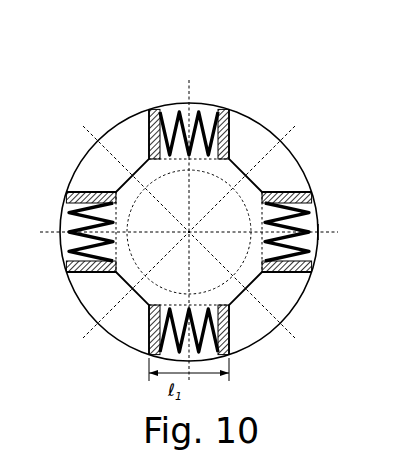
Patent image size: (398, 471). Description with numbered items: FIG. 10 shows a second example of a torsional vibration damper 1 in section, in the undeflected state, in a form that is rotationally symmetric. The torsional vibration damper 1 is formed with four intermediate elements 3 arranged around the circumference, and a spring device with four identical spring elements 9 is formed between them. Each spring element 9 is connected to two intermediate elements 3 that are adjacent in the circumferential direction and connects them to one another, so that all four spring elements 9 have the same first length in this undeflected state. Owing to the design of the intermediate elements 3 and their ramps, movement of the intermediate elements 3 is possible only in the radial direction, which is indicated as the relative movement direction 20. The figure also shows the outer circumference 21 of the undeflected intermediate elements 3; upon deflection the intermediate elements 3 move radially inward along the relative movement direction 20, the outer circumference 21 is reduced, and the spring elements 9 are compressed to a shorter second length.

The torsional vibration damper 1 is at (273, 73).
The intermediate element 3 is at (130, 121).
The spring element 9 is at (205, 101).
The relative movement direction 20 is at (159, 206).
The outer circumference 21 is at (319, 242).